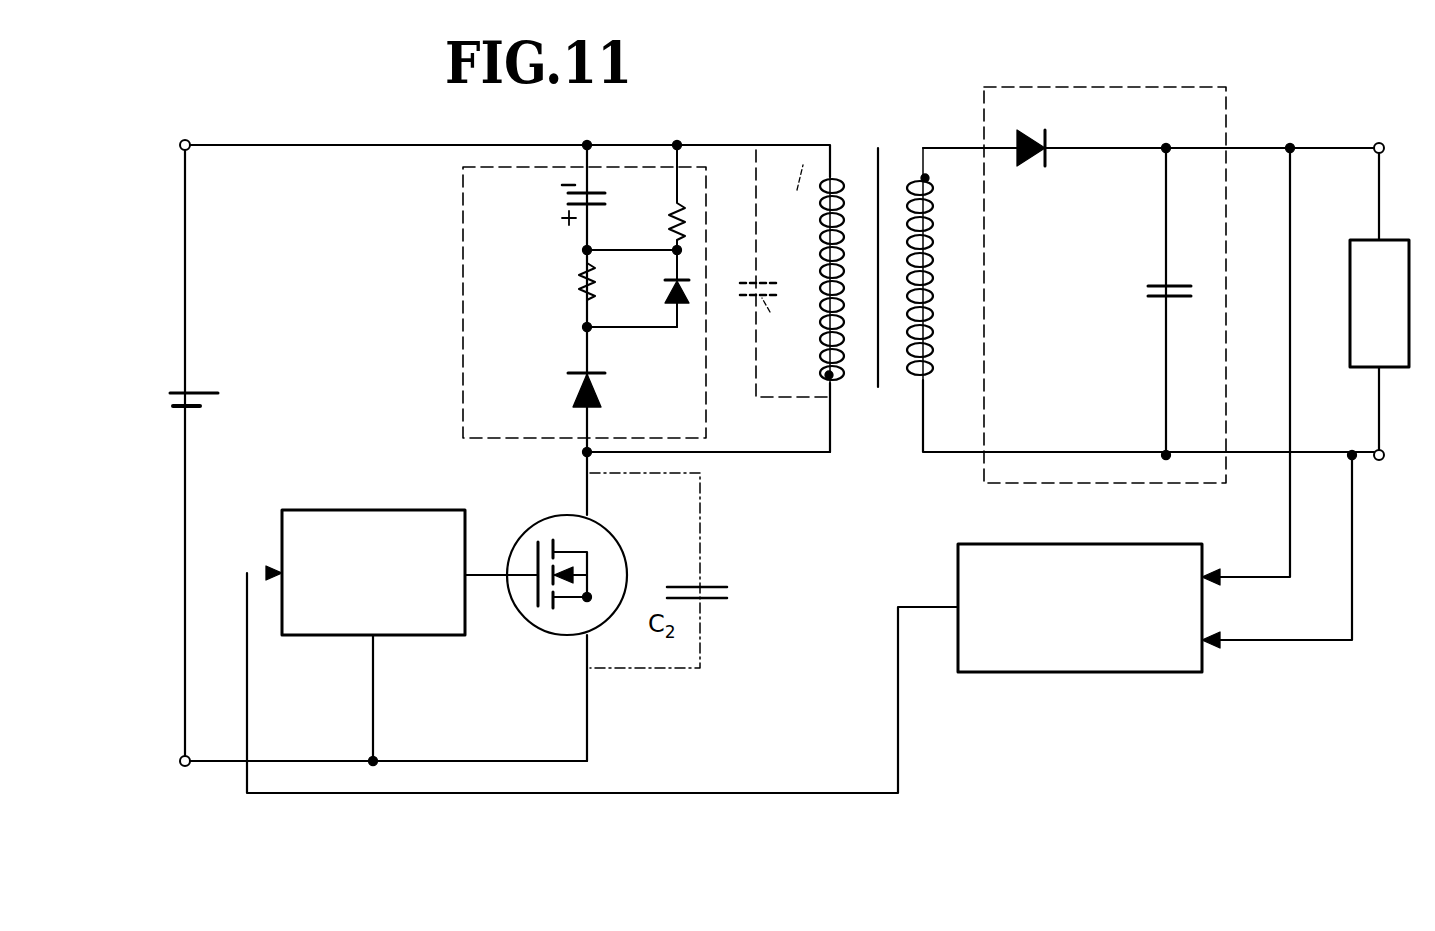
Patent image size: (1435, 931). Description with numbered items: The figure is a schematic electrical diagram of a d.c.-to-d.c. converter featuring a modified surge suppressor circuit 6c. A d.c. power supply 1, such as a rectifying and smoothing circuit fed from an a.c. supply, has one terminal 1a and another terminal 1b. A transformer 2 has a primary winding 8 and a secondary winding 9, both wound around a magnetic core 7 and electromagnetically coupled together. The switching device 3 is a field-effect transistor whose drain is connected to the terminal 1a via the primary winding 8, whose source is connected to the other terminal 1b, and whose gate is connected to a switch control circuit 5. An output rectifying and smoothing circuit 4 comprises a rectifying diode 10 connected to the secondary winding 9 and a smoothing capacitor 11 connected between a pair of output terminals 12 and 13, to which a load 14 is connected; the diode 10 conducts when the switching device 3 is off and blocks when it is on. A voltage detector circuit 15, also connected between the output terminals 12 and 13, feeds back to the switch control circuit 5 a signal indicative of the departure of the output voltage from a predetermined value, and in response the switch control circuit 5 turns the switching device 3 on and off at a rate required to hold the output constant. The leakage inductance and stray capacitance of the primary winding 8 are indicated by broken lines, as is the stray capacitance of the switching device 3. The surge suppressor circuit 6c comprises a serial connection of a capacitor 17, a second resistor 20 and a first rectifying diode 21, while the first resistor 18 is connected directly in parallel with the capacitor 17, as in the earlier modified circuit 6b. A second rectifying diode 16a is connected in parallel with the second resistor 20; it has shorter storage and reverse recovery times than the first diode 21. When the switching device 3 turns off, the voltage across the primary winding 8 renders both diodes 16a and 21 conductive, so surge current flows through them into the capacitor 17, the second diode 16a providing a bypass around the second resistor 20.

The terminal 1a is at (185, 140).
The terminal 1b is at (186, 767).
The d.c. power supply 1 is at (192, 390).
The transformer 2 is at (880, 266).
The switching device 3 is at (628, 572).
The rectifying and smoothing circuit 4 is at (1232, 130).
The switch control circuit 5 is at (366, 510).
The surge suppressor circuit 6b is at (785, 265).
The modified surge suppressor circuit 6c is at (463, 207).
The magnetic core 7 is at (879, 392).
The primary winding 8 is at (823, 253).
The secondary winding 9 is at (935, 210).
The rectifying diode 10 is at (1030, 167).
The smoothing capacitor 11 is at (1155, 280).
The output terminal 12 is at (1379, 142).
The output terminal 13 is at (1379, 461).
The load 14 is at (1356, 240).
The voltage detector circuit 15 is at (958, 580).
The second rectifying diode 16a is at (663, 296).
The capacitor 17 is at (566, 216).
The first resistor 18 is at (676, 212).
The second resistor 20 is at (575, 282).
The first rectifying diode 21 is at (576, 390).